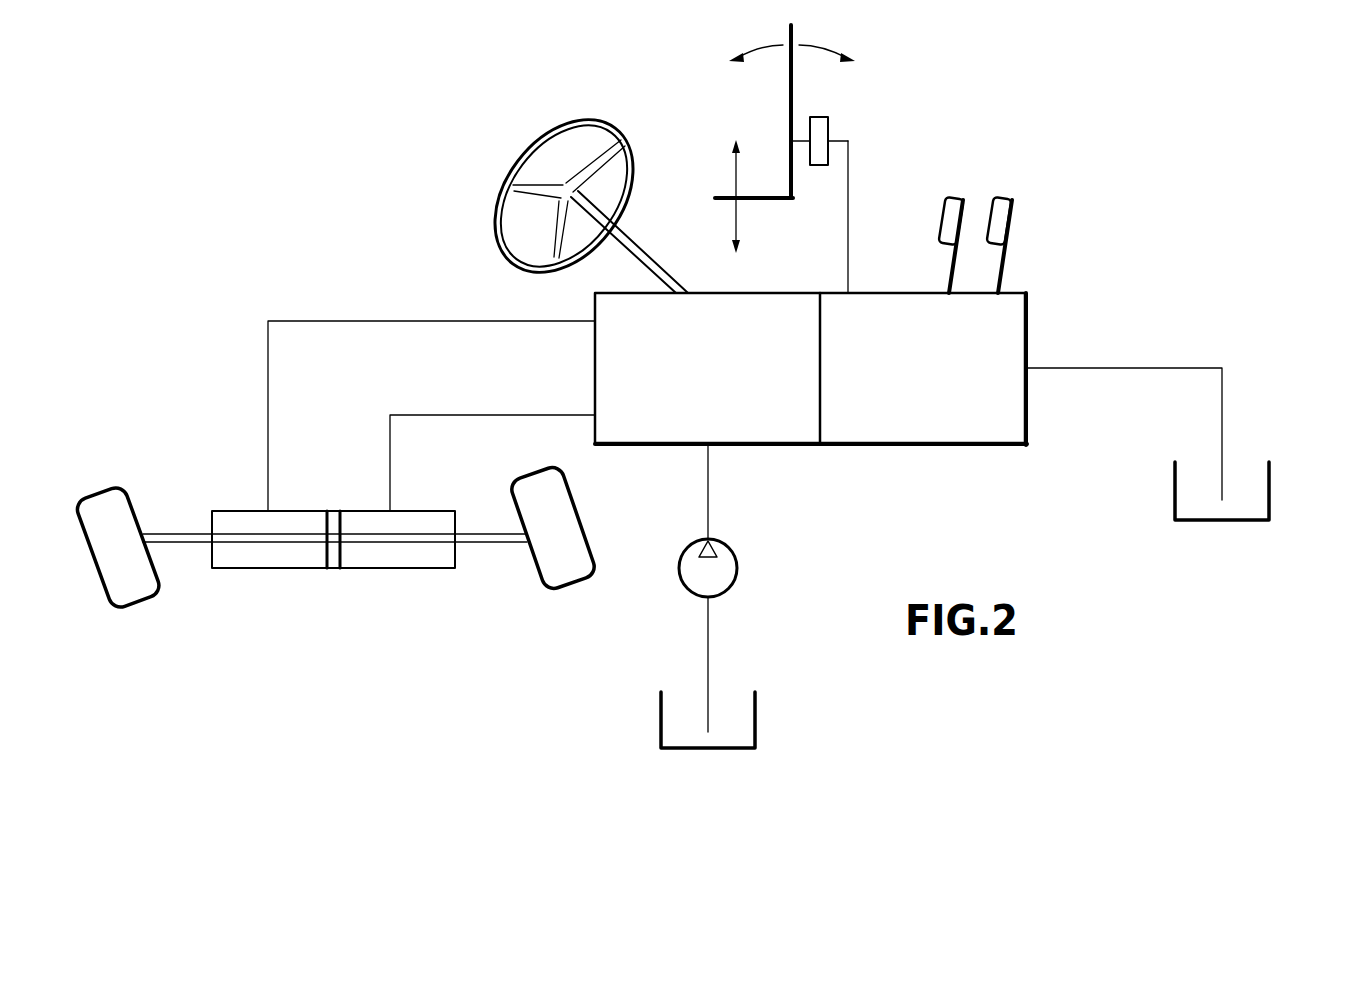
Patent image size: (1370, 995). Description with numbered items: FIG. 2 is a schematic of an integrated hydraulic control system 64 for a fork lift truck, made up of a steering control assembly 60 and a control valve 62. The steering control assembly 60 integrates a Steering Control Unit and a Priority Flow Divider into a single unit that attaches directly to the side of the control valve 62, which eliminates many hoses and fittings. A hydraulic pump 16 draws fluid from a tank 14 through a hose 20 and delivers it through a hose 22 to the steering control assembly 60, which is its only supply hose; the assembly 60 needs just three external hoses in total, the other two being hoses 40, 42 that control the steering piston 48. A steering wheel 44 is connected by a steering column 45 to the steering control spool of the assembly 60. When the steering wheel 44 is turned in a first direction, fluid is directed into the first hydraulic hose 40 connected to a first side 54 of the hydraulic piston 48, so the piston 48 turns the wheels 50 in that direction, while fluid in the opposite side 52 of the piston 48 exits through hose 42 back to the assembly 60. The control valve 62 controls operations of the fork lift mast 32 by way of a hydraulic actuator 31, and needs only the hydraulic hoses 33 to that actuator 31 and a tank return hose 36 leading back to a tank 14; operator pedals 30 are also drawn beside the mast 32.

The tank 14 is at (757, 718).
The hydraulic pump 16 is at (738, 568).
The external hydraulic hose 20 is at (710, 642).
The hose 22 is at (710, 490).
The pedals 30 is at (1009, 198).
The hydraulic actuator 31 is at (830, 118).
The fork lift mast 32 is at (793, 82).
The hydraulic hoses 33 is at (850, 195).
The tank return hose 36 is at (1127, 368).
The first hydraulic hose 40 is at (444, 320).
The hose 42 is at (444, 415).
The steering wheel 44 is at (524, 158).
The steering column 45 is at (645, 250).
The hydraulic piston 48 is at (380, 568).
The wheels 50 is at (115, 613).
The opposite side 52 is at (243, 511).
The first side 54 is at (428, 511).
The steering control assembly 60 is at (652, 445).
The control valve 62 is at (920, 447).
The integrated hydraulic control system 64 is at (998, 472).